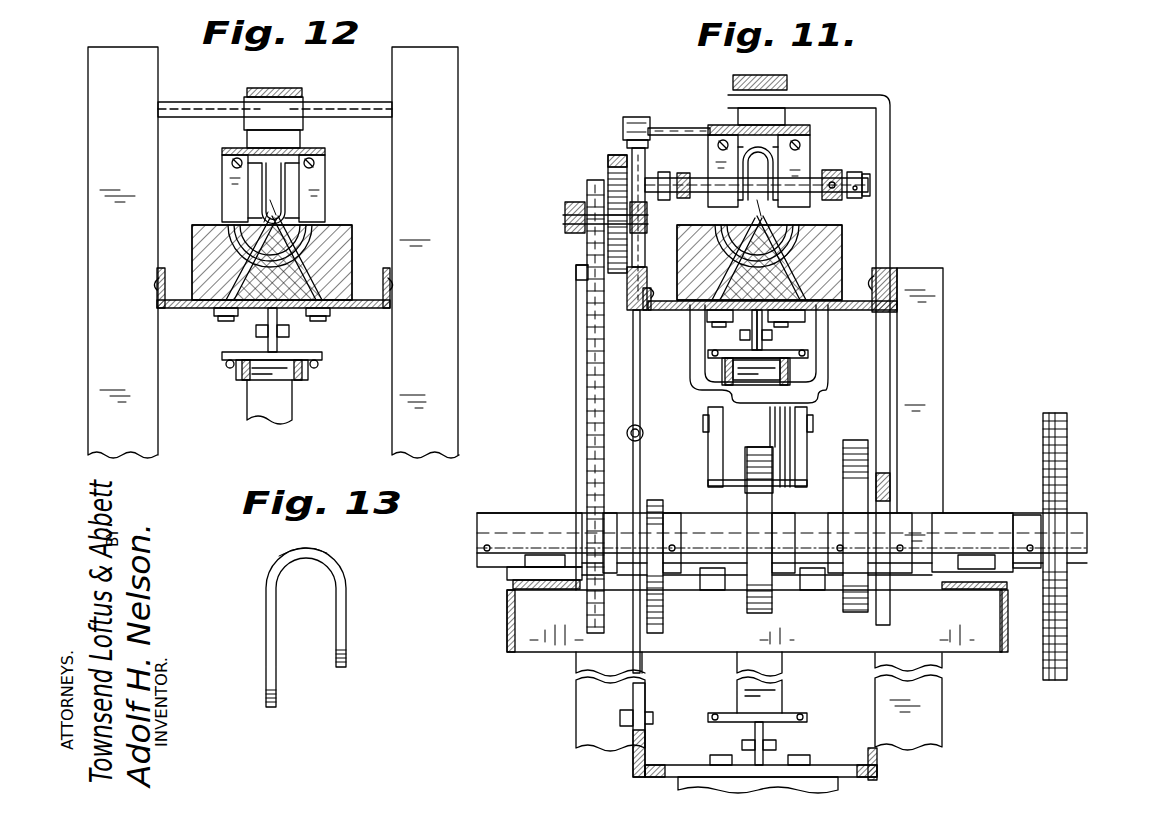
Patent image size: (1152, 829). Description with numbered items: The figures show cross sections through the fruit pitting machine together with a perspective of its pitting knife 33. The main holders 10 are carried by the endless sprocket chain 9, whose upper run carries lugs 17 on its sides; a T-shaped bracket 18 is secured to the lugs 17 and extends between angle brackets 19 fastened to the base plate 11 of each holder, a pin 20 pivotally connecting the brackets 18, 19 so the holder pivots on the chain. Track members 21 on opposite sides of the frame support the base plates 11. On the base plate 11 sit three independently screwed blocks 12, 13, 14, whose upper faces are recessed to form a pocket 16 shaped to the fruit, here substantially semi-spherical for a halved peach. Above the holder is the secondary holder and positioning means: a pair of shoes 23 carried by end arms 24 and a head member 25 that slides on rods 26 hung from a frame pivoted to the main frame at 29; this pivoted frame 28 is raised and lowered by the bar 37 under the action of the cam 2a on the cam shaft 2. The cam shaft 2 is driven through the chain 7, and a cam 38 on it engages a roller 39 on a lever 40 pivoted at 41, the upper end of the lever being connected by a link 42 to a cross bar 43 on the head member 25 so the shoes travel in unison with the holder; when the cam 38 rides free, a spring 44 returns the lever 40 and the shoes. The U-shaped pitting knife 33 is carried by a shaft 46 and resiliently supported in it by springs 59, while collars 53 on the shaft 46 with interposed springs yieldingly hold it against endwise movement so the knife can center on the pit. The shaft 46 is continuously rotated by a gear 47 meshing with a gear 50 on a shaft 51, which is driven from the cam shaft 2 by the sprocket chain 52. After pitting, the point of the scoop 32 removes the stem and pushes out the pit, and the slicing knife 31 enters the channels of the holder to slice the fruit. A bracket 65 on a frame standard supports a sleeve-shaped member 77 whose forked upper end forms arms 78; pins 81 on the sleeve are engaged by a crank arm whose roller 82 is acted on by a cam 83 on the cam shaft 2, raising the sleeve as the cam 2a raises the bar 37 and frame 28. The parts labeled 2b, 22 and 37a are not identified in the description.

In FIG. 11, the cam shaft 2 is at (1090, 544).
In FIG. 11, the cam 2a is at (860, 608).
In FIG. 11, the gear 2b is at (870, 440).
In FIG. 11, the chain 7 is at (1068, 444).
In FIG. 12, the endless sprocket chain 9 is at (272, 372).
In FIG. 11, the endless sprocket chain 9 is at (772, 388).
In FIG. 12, the carrier block 10 is at (362, 249).
In FIG. 11, the carrier block 10 is at (843, 246).
In FIG. 12, the base plate 11 is at (186, 312).
In FIG. 11, the base plate 11 is at (880, 300).
In FIG. 12, the block 12 is at (206, 244).
In FIG. 11, the block 12 is at (759, 262).
In FIG. 12, the block 13 is at (312, 316).
In FIG. 12, the block 14 is at (316, 232).
In FIG. 12, the pocket 16 is at (200, 238).
In FIG. 12, the lug 17 is at (312, 368).
In FIG. 11, the lug 17 is at (706, 375).
In FIG. 11, the T-shaped bracket 18 is at (752, 345).
In FIG. 12, the angle bracket 19 is at (262, 312).
In FIG. 11, the angle bracket 19 is at (730, 320).
In FIG. 12, the pin 20 is at (290, 334).
In FIG. 11, the pin 20 is at (814, 338).
In FIG. 12, the track member 21 is at (158, 280).
In FIG. 11, the track member 21 is at (576, 262).
In FIG. 11, the side plate 22 is at (633, 766).
In FIG. 12, the shoe 23 is at (236, 224).
In FIG. 11, the shoe 23 is at (716, 228).
In FIG. 11, the end arm 24 is at (812, 182).
In FIG. 12, the head member 25 is at (312, 150).
In FIG. 11, the head member 25 is at (812, 130).
In FIG. 12, the rod 26 is at (232, 163).
In FIG. 11, the rod 26 is at (759, 171).
In FIG. 12, the pivoted frame 28 is at (278, 92).
In FIG. 11, the pivoted frame 28 is at (765, 75).
In FIG. 12, the pivotal support 29 is at (378, 100).
In FIG. 12, the slicing knife 31 is at (352, 240).
In FIG. 11, the slicing knife 31 is at (684, 258).
In FIG. 12, the scoop point 32 is at (274, 192).
In FIG. 13, the pitting knife 33 is at (345, 608).
In FIG. 11, the pitting knife 33 is at (775, 152).
In FIG. 11, the bar 37 is at (888, 420).
In FIG. 11, the bar arm 37a is at (852, 92).
In FIG. 11, the cam 38 is at (664, 610).
In FIG. 11, the roller 39 is at (640, 527).
In FIG. 11, the lever 40 is at (633, 468).
In FIG. 11, the pivot 41 is at (620, 718).
In FIG. 11, the link 42 is at (632, 118).
In FIG. 11, the cross bar 43 is at (660, 128).
In FIG. 11, the spring 44 is at (626, 441).
In FIG. 11, the shaft 46 is at (858, 185).
In FIG. 11, the gear 47 is at (610, 157).
In FIG. 11, the gear 50 is at (620, 270).
In FIG. 11, the shaft 51 is at (563, 226).
In FIG. 11, the sprocket chain 52 is at (585, 376).
In FIG. 11, the collar 53 is at (610, 172).
In FIG. 11, the spring 59 is at (832, 172).
In FIG. 11, the bracket 65 is at (730, 510).
In FIG. 11, the sleeve-shaped member 77 is at (740, 430).
In FIG. 11, the arm 78 is at (692, 375).
In FIG. 11, the pin 81 is at (703, 430).
In FIG. 11, the roller 82 is at (772, 458).
In FIG. 11, the cam 83 is at (760, 518).